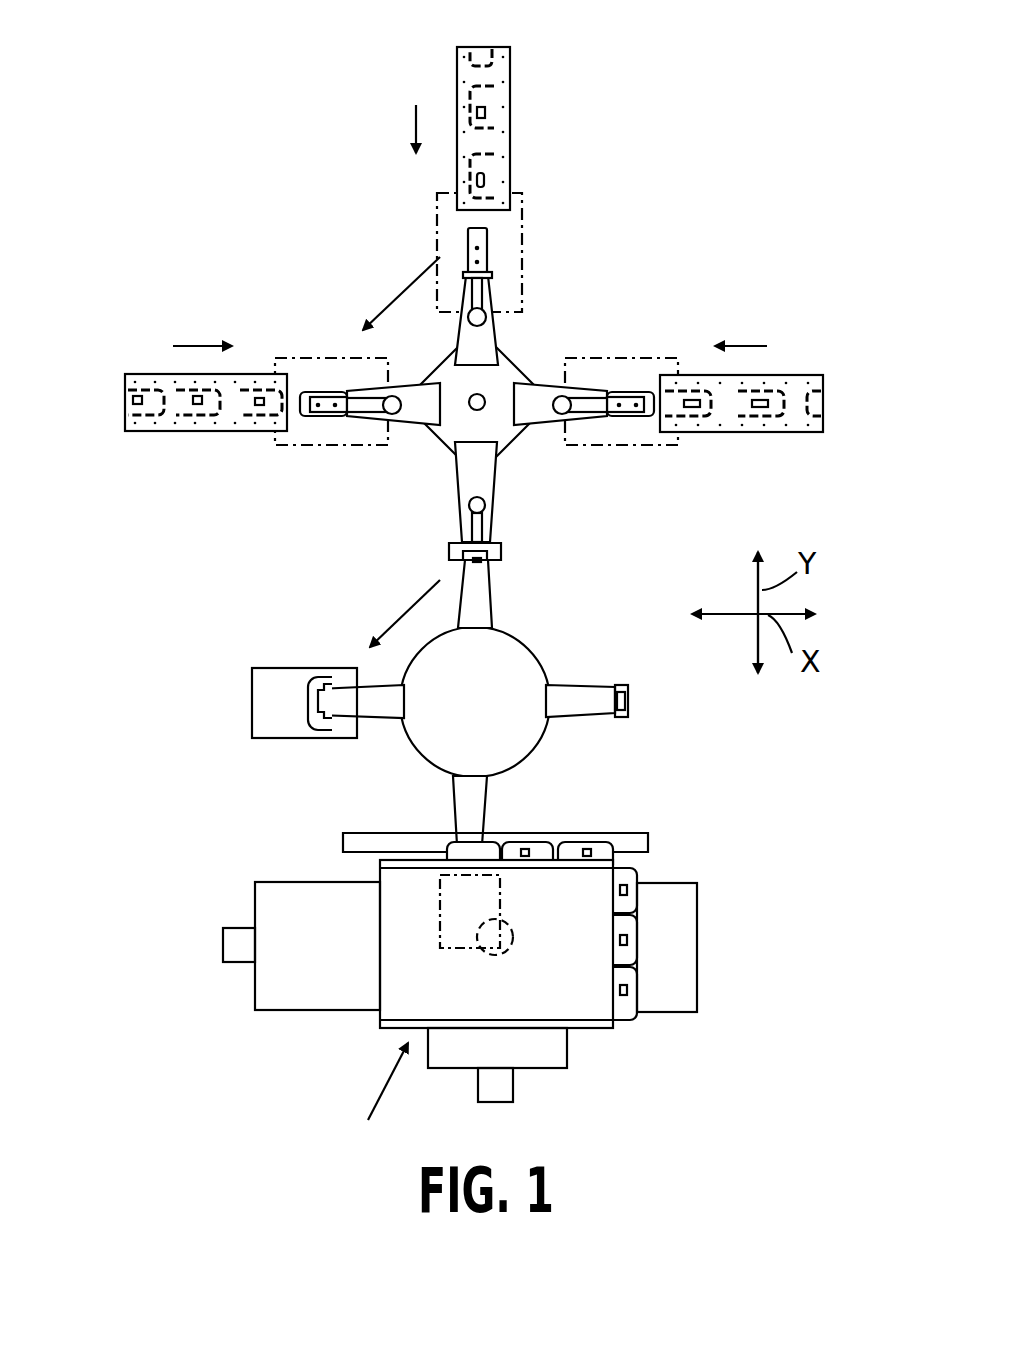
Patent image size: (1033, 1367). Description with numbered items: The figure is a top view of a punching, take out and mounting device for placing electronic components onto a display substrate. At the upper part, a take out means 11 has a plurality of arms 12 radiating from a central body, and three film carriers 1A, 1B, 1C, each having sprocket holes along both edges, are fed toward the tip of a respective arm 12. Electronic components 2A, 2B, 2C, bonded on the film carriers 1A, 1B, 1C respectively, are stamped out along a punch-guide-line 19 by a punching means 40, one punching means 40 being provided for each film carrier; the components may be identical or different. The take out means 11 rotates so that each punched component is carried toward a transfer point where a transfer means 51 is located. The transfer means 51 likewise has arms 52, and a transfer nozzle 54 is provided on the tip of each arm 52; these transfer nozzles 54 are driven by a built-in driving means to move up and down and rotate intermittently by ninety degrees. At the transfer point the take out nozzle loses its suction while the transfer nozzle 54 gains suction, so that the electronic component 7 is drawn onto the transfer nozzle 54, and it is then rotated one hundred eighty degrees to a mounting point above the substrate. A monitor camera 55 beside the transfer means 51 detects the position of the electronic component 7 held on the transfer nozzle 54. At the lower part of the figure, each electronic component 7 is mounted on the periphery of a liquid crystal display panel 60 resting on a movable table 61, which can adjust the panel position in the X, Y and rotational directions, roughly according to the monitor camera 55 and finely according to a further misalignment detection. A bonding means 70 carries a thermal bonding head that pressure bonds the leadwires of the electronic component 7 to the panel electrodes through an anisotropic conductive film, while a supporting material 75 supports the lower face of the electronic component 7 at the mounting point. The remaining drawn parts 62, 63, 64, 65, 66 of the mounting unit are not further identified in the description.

The film carrier 1A is at (510, 80).
The film carrier 1B is at (705, 433).
The film carrier 1C is at (210, 432).
The electronic component 2A is at (485, 182).
The electronic component 2B is at (768, 407).
The electronic component 2C is at (198, 407).
The electronic component 7 is at (503, 550).
The take out means 11 is at (503, 433).
The arm 12 is at (497, 337).
The punch-guide-line 19 is at (468, 108).
The punching means 40 is at (522, 248).
The transfer means 51 is at (510, 740).
The arm 52 is at (477, 607).
The transfer nozzle 54 is at (447, 550).
The monitor camera 55 is at (252, 693).
The liquid crystal display panel 60 is at (480, 1007).
The movable table 61 is at (363, 1099).
The drive unit 62 is at (268, 988).
The lower block 63 is at (552, 1052).
The side block 64 is at (517, 933).
The side tab 65 is at (225, 942).
The bottom tab 66 is at (502, 1085).
The bonding means 70 is at (440, 920).
The supporting material 75 is at (648, 848).